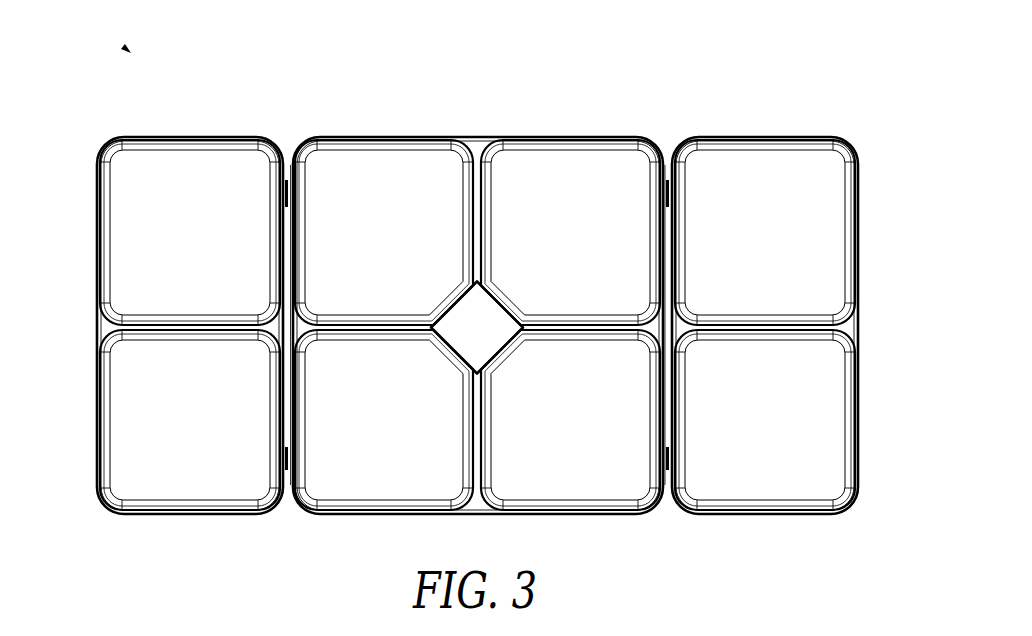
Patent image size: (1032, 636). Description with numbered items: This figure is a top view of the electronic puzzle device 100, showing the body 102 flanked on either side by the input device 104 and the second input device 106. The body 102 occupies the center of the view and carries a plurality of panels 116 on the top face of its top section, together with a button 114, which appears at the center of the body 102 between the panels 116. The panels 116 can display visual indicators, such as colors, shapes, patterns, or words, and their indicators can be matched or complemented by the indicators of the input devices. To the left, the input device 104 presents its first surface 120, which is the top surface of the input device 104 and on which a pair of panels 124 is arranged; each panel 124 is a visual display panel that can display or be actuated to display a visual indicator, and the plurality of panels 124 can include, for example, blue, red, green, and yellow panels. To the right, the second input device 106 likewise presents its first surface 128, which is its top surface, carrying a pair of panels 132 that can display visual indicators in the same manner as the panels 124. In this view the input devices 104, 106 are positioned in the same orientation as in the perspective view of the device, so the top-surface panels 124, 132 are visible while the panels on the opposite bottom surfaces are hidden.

The electronic puzzle device 100 is at (480, 265).
The body 102 is at (478, 302).
The input device 104 is at (155, 305).
The second input device 106 is at (802, 302).
The button 114 is at (478, 312).
The panels 116 is at (367, 150).
The first surface 120 is at (140, 272).
The panels 124 is at (140, 170).
The first surface 128 is at (815, 272).
The panels 132 is at (823, 170).